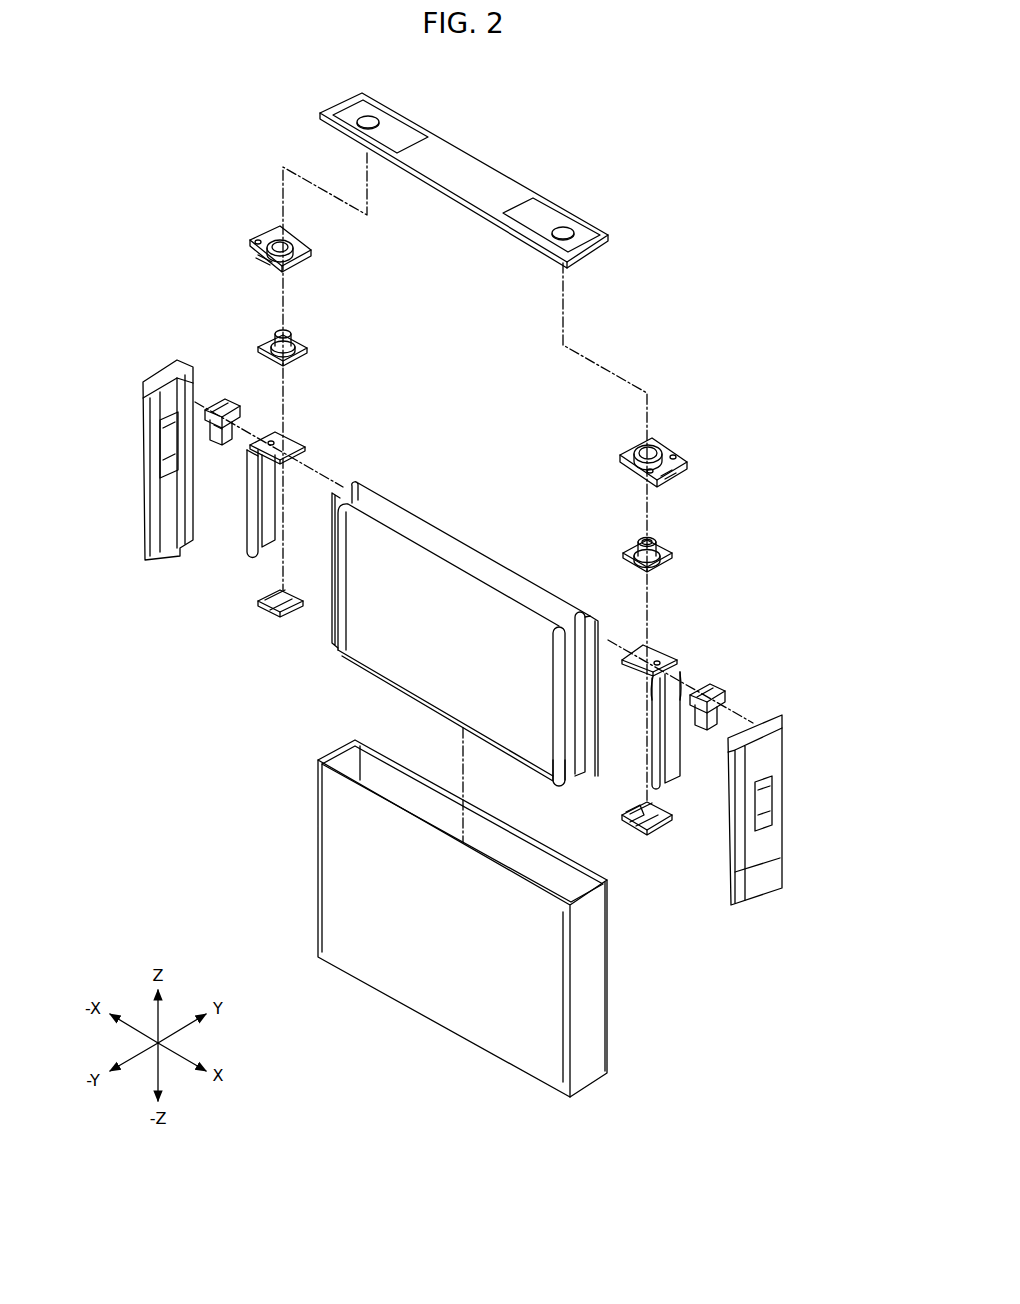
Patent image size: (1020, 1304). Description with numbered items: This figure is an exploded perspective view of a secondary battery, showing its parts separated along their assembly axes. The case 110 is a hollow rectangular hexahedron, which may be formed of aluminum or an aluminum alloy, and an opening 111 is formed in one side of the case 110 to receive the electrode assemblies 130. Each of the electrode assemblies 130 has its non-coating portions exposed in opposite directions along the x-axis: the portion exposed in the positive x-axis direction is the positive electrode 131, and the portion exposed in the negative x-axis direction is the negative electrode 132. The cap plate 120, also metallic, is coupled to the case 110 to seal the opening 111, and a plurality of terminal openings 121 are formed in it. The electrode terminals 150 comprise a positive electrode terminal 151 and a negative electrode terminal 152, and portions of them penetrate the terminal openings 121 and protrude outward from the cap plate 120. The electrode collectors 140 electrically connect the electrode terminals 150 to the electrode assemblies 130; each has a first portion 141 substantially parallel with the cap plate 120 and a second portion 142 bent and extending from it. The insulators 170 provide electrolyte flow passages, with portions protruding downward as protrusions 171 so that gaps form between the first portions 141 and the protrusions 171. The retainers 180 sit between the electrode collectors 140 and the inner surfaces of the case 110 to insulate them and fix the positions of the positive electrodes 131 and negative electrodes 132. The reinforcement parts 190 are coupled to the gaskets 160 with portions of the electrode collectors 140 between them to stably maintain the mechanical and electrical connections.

The case 110 is at (500, 895).
The opening 111 is at (430, 801).
The cap plate 120 is at (477, 160).
The terminal openings 121 is at (371, 117).
The electrode assemblies 130 is at (465, 632).
The positive electrode 131 is at (567, 781).
The negative electrode 132 is at (355, 484).
The electrode collectors 140 is at (303, 432).
The first portions 141 is at (657, 655).
The second portions 142 is at (672, 688).
The electrode terminals 150 is at (688, 529).
The positive electrode terminal 151 is at (655, 538).
The negative electrode terminal 152 is at (297, 333).
The gaskets 160 is at (254, 226).
The insulators 170 is at (258, 604).
The protrusions 171 is at (626, 814).
The retainers 180 is at (158, 370).
The reinforcement parts 190 is at (219, 390).